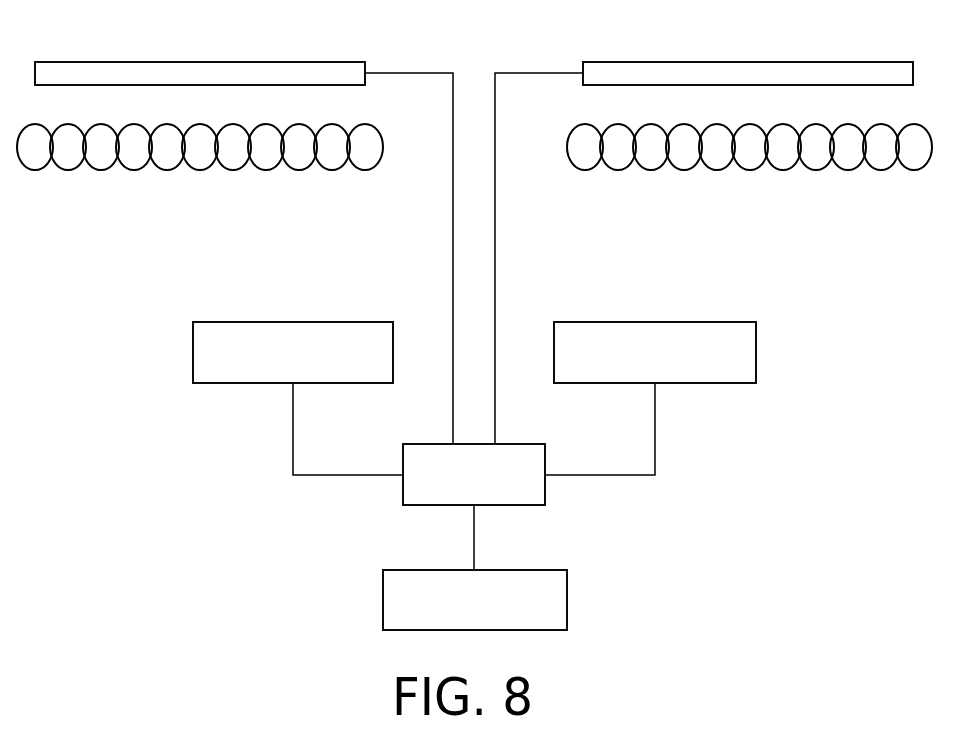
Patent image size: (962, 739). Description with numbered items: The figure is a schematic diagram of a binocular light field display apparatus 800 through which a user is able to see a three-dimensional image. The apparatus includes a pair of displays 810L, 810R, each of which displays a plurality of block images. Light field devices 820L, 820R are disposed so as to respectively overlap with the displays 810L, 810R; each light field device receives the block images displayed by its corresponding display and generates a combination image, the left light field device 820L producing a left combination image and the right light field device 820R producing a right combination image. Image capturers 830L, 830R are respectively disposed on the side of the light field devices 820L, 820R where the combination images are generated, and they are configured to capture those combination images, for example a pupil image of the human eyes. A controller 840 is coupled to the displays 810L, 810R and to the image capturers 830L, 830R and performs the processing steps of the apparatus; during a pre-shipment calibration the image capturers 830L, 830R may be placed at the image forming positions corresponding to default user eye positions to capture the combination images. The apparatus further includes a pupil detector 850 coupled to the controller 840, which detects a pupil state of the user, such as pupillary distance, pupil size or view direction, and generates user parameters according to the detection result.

The light field display apparatus 800 is at (913, 645).
The display 810L is at (122, 62).
The display 810R is at (827, 62).
The light field device 820L is at (135, 170).
The light field device 820R is at (813, 170).
The image capturer 830L is at (334, 322).
The image capturer 830R is at (684, 322).
The controller 840 is at (526, 444).
The pupil detector 850 is at (502, 570).